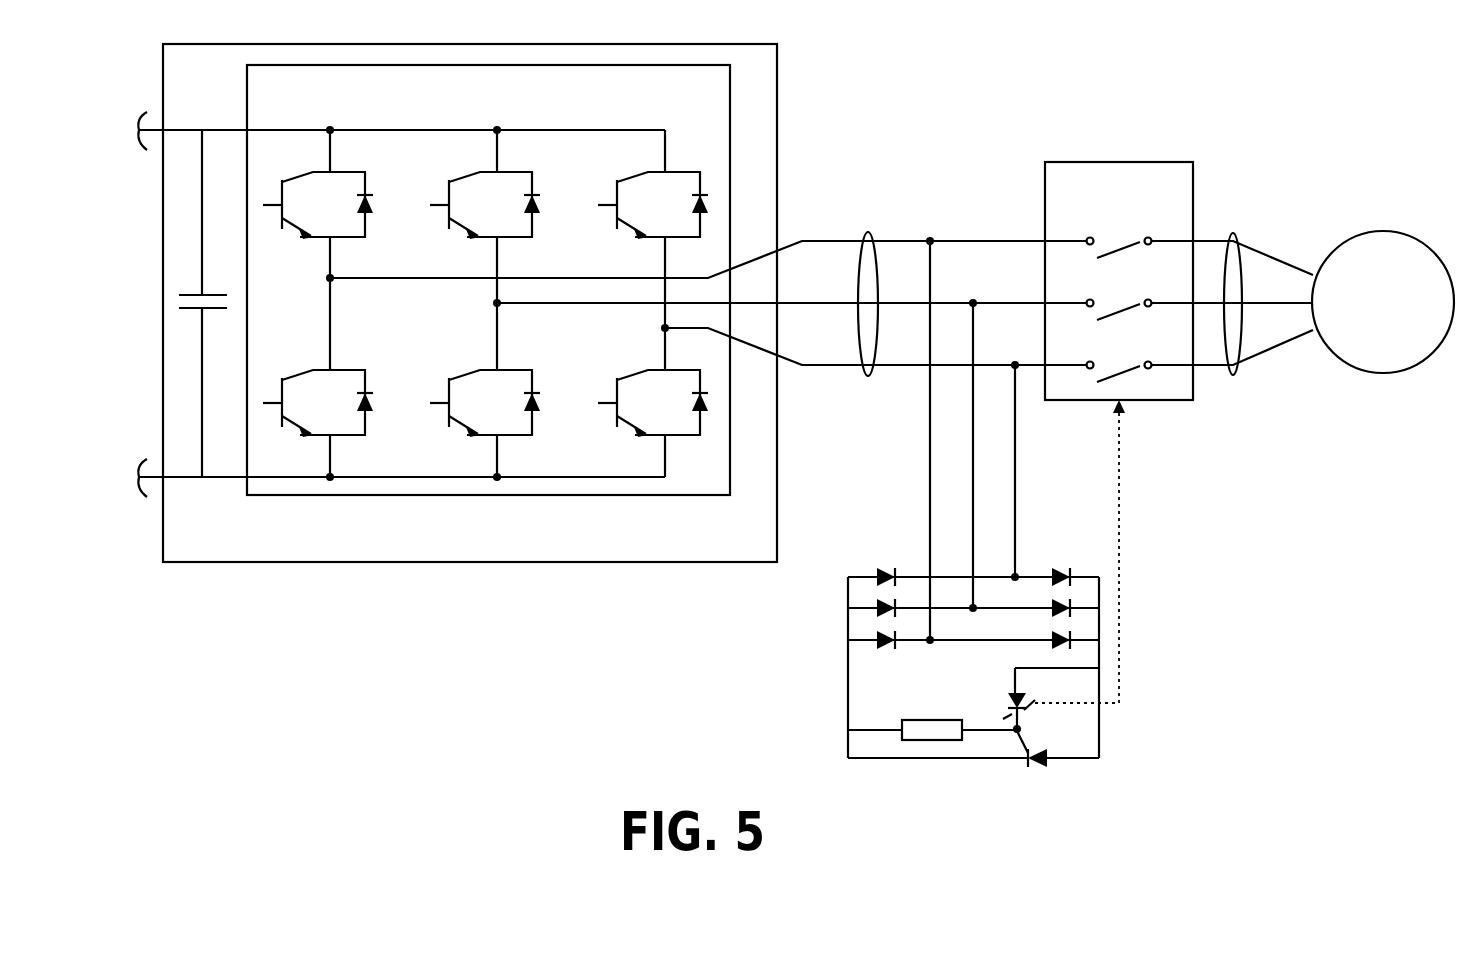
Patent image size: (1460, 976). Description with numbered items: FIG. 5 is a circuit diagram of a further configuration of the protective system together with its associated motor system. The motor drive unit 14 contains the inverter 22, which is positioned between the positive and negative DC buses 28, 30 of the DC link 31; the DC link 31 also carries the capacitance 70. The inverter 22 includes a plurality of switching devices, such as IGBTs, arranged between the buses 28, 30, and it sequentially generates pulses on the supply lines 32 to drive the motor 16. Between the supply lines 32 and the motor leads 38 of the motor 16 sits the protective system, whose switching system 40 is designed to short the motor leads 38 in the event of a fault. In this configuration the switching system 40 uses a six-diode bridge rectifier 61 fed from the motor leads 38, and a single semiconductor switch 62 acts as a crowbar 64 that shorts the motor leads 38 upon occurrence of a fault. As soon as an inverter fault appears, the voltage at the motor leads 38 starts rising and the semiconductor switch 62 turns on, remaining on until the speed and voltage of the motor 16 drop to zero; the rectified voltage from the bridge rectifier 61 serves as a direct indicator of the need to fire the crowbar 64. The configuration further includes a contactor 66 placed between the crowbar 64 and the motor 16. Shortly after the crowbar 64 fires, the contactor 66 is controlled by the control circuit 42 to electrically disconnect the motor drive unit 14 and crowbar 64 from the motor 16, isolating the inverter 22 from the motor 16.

The motor drive unit 14 is at (485, 565).
The motor 16 is at (1367, 331).
The inverter 22 is at (490, 65).
The positive DC bus 28 is at (174, 129).
The negative DC bus 30 is at (178, 480).
The DC link 31 is at (147, 95).
The supply lines 32 is at (868, 232).
The motor leads 38 is at (1233, 233).
The switching system 40 is at (947, 551).
The control circuit 42 is at (1129, 648).
The bridge rectifier 61 is at (1048, 545).
The semiconductor switch 62 is at (1040, 762).
The crowbar 64 is at (840, 632).
The contactor 66 is at (1118, 162).
The capacitance 70 is at (187, 317).